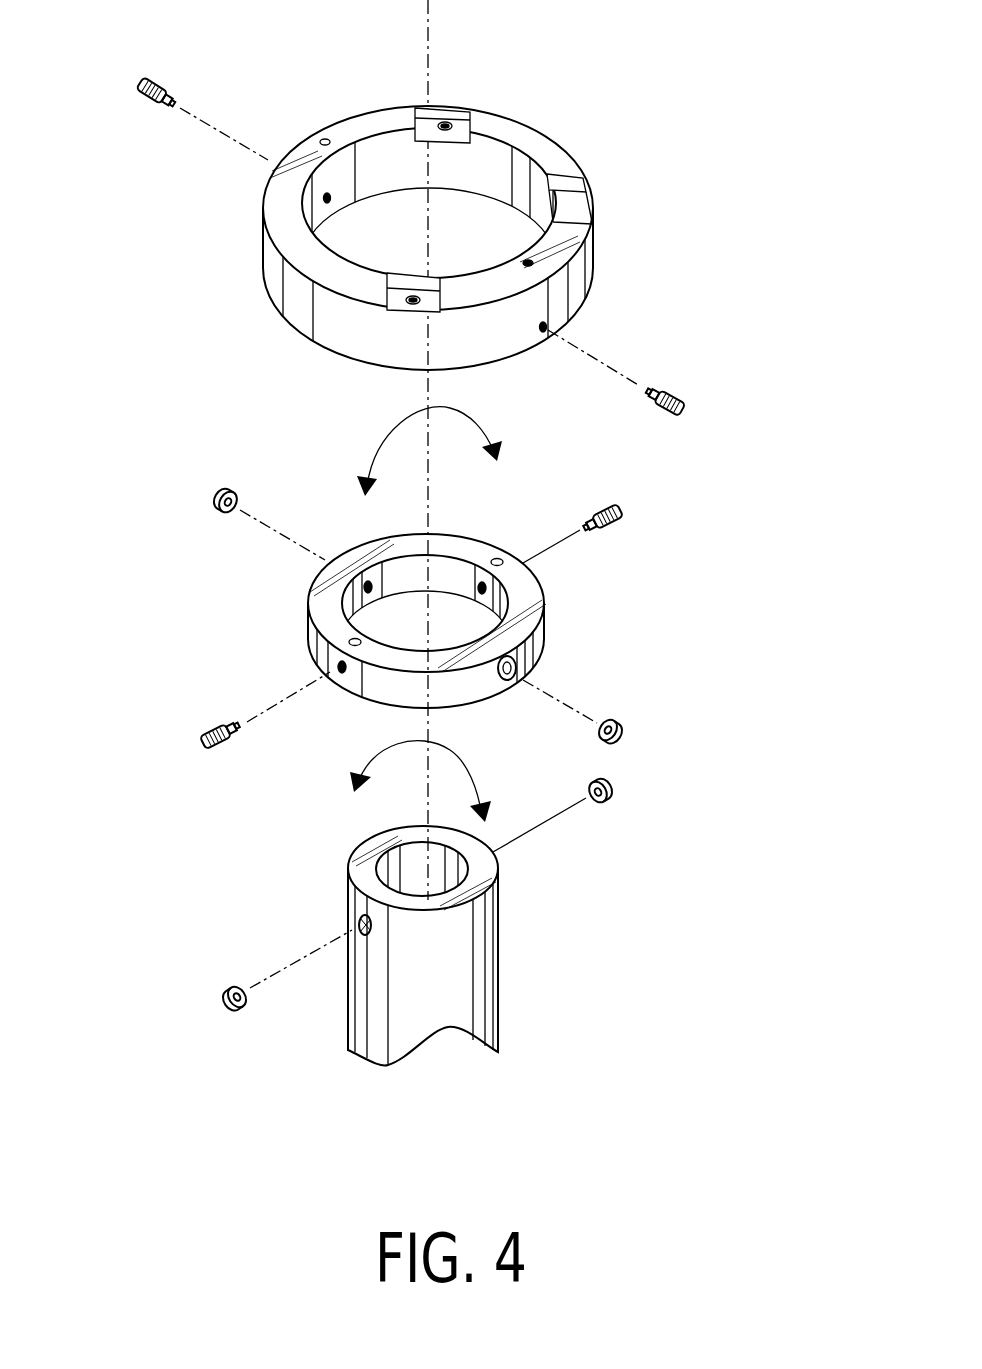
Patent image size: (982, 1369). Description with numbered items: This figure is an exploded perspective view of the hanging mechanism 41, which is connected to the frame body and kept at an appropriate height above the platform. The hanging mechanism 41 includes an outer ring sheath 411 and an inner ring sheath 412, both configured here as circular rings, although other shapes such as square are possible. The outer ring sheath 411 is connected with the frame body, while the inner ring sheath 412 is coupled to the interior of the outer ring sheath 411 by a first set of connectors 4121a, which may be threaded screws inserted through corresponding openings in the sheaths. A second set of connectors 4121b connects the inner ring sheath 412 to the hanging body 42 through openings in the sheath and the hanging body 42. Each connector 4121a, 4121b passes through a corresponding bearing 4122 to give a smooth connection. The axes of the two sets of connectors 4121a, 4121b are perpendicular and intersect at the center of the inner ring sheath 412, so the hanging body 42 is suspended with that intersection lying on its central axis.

The hanging mechanism 41 is at (628, 183).
The outer ring sheath 411 is at (275, 290).
The inner ring sheath 412 is at (545, 642).
The first set of connectors 4121a is at (143, 98).
The second set of connectors 4121b is at (618, 521).
The bearing 4122 is at (218, 488).
The hanging body 42 is at (478, 967).